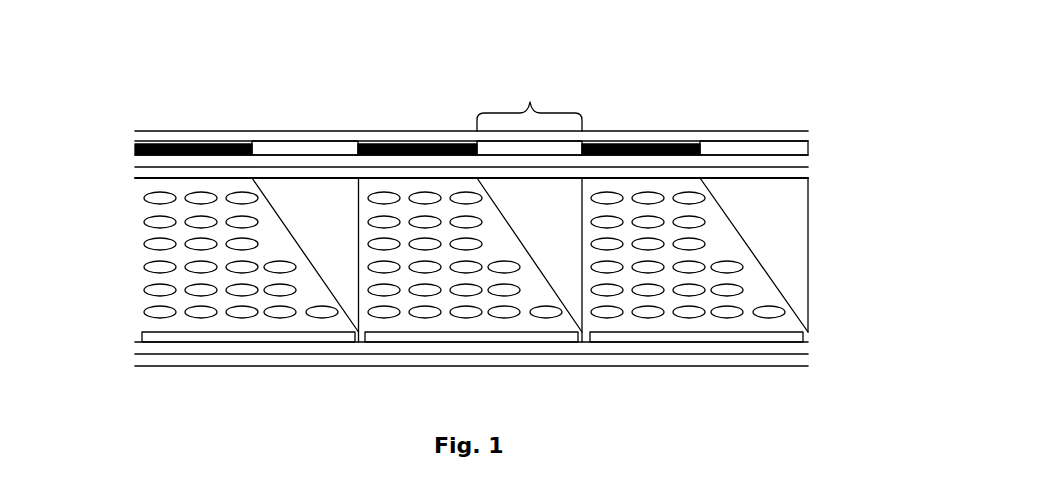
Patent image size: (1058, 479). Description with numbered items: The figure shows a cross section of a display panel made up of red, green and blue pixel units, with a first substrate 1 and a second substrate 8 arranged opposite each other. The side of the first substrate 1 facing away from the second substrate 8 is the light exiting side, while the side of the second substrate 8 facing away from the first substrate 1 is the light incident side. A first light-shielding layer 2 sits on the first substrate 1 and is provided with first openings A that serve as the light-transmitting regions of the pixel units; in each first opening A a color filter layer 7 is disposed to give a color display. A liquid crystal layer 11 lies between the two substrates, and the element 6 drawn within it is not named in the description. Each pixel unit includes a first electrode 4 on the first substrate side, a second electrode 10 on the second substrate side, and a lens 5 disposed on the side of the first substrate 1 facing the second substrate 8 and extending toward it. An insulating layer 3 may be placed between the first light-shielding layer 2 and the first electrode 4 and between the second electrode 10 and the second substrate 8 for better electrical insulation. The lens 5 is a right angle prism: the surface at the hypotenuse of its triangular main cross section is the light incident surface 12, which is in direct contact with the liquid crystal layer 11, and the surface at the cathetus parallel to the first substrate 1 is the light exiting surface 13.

The first substrate 1 is at (808, 132).
The first light-shielding layer 2 is at (135, 148).
The insulating layer 3 is at (808, 160).
The first electrode 4 is at (135, 172).
The lens 5 is at (808, 232).
The light emitting particles 6 is at (145, 244).
The color filter layer 7 is at (297, 143).
The second substrate 8 is at (135, 360).
The second electrode 10 is at (140, 332).
The liquid crystal layer 11 is at (501, 287).
The light incident surface 12 is at (321, 283).
The light exiting surface 13 is at (328, 178).
The first opening A is at (529, 105).